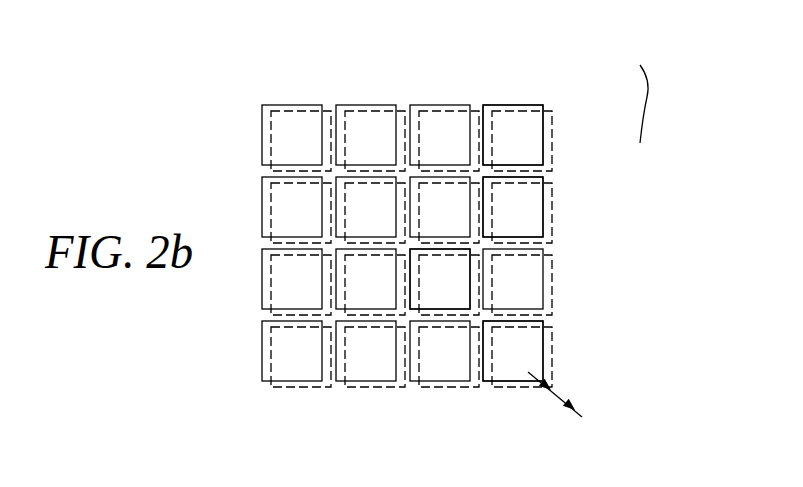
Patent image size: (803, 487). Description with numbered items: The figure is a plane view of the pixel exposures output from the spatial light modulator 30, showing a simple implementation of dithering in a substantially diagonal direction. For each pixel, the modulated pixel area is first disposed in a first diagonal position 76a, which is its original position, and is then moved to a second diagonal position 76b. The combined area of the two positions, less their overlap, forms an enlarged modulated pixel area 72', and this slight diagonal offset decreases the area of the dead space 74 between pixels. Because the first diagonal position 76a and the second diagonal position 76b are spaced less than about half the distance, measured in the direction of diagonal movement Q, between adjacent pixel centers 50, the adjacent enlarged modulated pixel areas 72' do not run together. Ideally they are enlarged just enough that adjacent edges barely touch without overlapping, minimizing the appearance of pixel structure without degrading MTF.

The spatial light modulator 30 is at (575, 214).
The pixel center 50 is at (458, 287).
The enlarged modulated pixel area 72' is at (675, 104).
The dead space 74 is at (475, 103).
The first diagonal position 76a is at (528, 104).
The second diagonal position 76b is at (552, 148).
The direction of diagonal movement Q is at (558, 393).